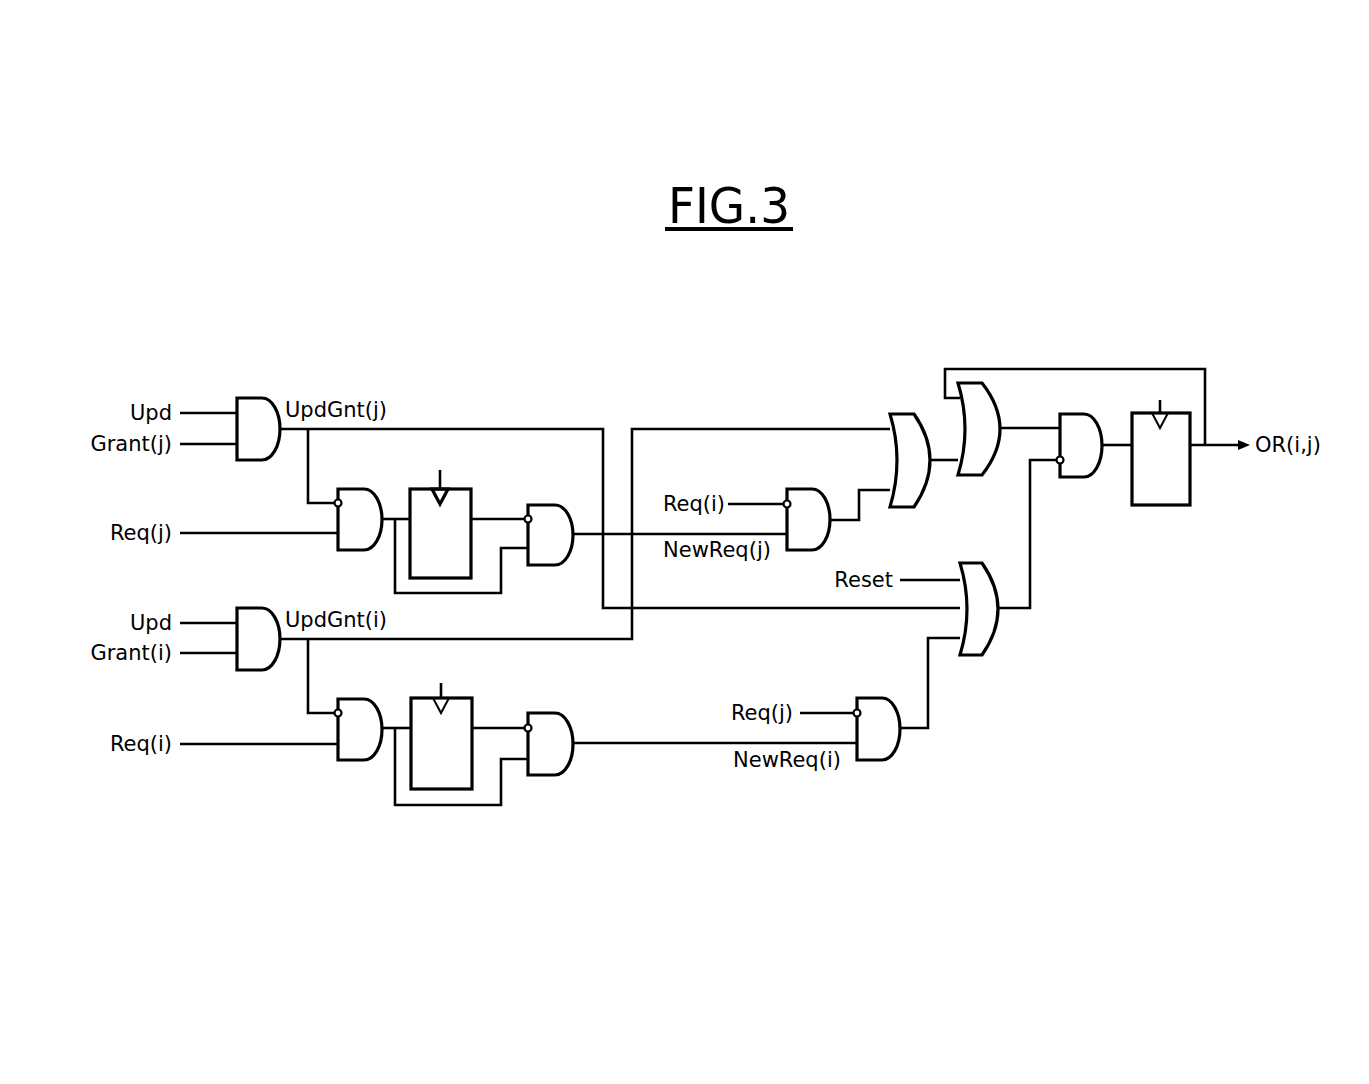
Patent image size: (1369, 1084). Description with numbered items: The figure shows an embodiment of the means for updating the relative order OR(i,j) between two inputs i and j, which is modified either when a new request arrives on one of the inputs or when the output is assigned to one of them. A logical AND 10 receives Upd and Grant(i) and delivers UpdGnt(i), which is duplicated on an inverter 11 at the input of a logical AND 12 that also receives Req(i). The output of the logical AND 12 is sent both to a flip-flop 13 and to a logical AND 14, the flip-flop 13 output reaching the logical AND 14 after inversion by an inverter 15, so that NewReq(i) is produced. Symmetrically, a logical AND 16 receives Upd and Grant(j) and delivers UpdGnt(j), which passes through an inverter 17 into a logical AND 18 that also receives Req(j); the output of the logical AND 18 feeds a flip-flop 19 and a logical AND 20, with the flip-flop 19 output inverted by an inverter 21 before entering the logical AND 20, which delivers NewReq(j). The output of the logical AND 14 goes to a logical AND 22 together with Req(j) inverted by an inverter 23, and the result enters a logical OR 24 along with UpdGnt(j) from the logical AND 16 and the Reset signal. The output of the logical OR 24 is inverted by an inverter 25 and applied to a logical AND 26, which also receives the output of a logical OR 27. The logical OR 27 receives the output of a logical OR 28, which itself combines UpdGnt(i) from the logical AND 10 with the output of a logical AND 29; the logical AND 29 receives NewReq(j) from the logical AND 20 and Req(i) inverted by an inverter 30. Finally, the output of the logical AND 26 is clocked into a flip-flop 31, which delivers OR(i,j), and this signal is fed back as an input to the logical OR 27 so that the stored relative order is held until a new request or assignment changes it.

The logical AND 10 is at (252, 607).
The inverter 11 is at (338, 707).
The logical AND 12 is at (355, 762).
The flip-flop 13 is at (440, 791).
The logical AND 14 is at (545, 777).
The inverter 15 is at (527, 711).
The logical AND 16 is at (252, 397).
The inverter 17 is at (338, 497).
The logical AND 18 is at (355, 552).
The flip-flop 19 is at (440, 580).
The logical AND 20 is at (545, 567).
The inverter 21 is at (527, 503).
The logical AND 22 is at (870, 762).
The inverter 23 is at (855, 697).
The logical OR 24 is at (975, 657).
The inverter 25 is at (1058, 466).
The logical AND 26 is at (1077, 412).
The logical OR 27 is at (975, 477).
The logical OR 28 is at (908, 412).
The logical AND 29 is at (800, 552).
The inverter 30 is at (786, 488).
The flip-flop 31 is at (1162, 507).